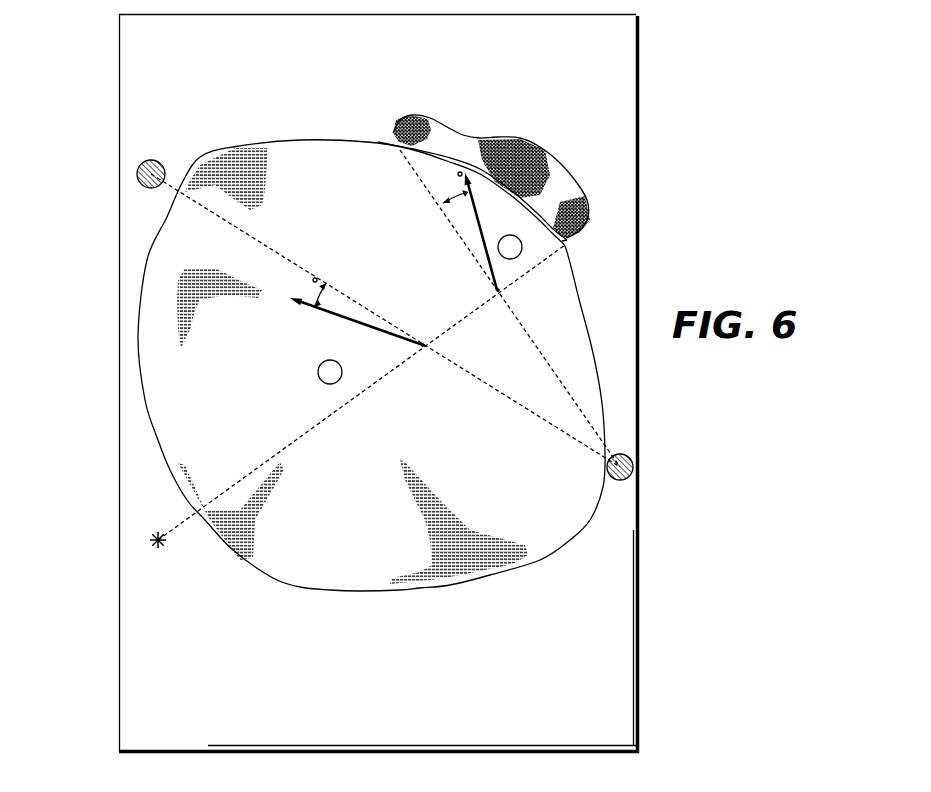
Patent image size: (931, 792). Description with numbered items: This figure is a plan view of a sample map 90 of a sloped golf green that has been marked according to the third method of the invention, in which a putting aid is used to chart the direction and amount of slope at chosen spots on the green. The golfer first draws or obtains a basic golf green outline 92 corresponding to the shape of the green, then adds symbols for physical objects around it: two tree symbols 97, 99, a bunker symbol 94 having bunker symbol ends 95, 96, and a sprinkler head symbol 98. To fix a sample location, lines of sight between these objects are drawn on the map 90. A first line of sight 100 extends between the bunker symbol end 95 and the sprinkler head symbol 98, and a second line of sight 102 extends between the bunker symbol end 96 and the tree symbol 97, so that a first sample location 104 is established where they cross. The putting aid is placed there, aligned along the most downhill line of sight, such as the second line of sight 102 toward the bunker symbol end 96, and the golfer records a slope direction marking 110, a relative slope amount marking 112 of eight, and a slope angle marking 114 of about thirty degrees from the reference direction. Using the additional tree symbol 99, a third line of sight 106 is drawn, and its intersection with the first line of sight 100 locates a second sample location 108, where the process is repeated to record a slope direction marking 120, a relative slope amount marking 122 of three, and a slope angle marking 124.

The map 90 is at (638, 78).
The golf green outline 92 is at (300, 592).
The bunker symbol 94 is at (480, 137).
The bunker symbol end 95 is at (566, 240).
The bunker symbol end 96 is at (400, 147).
The tree symbol 97 is at (625, 481).
The sprinkler head symbol 98 is at (153, 545).
The tree symbol 99 is at (150, 160).
The first line of sight 100 is at (520, 273).
The second line of sight 102 is at (568, 390).
The first sample location 104 is at (498, 294).
The third line of sight 106 is at (255, 237).
The second sample location 108 is at (424, 349).
The slope direction marking 110 is at (485, 257).
The relative slope amount marking 112 is at (522, 249).
The slope angle marking 114 is at (440, 170).
The slope direction marking 120 is at (325, 314).
The relative slope amount marking 122 is at (322, 381).
The slope angle marking 124 is at (280, 282).